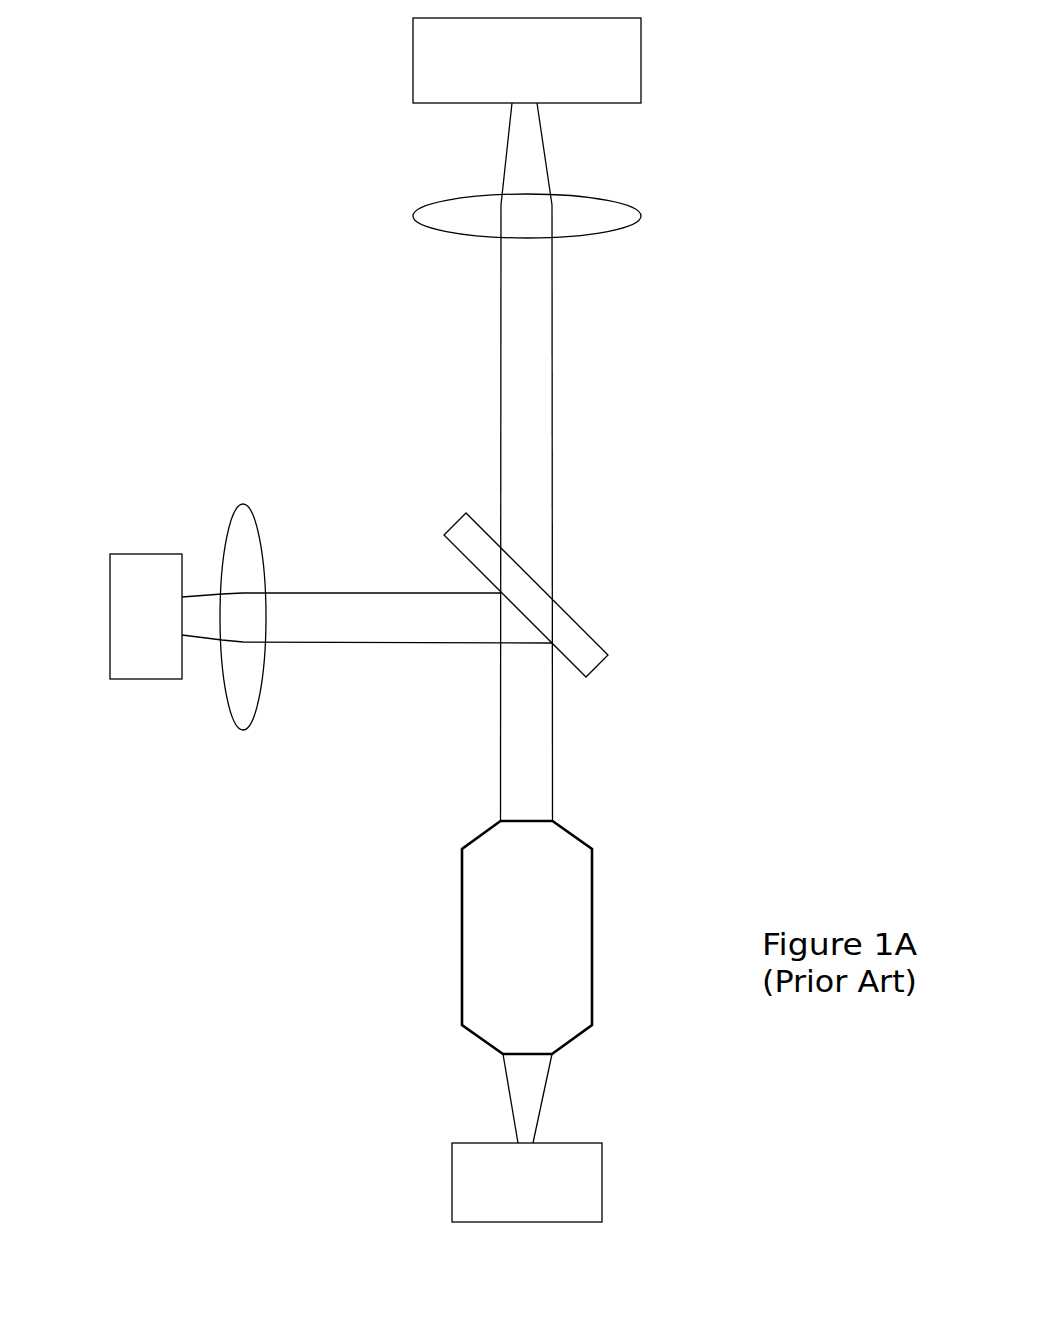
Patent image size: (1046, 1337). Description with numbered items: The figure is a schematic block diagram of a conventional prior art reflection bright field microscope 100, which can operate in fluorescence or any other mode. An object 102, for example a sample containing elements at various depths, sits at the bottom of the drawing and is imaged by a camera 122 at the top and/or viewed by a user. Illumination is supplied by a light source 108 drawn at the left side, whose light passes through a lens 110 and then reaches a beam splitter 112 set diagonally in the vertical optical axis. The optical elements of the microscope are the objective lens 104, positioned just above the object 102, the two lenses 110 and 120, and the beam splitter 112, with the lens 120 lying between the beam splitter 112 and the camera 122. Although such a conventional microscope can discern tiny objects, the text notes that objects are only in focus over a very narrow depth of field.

The reflection bright field microscope 100 is at (321, 937).
The object 102 is at (527, 1182).
The objective lens 104 is at (527, 937).
The light source 108 is at (94, 616).
The lens 110 is at (248, 593).
The beam splitter 112 is at (553, 595).
The lens 120 is at (545, 203).
The camera 122 is at (527, 60).